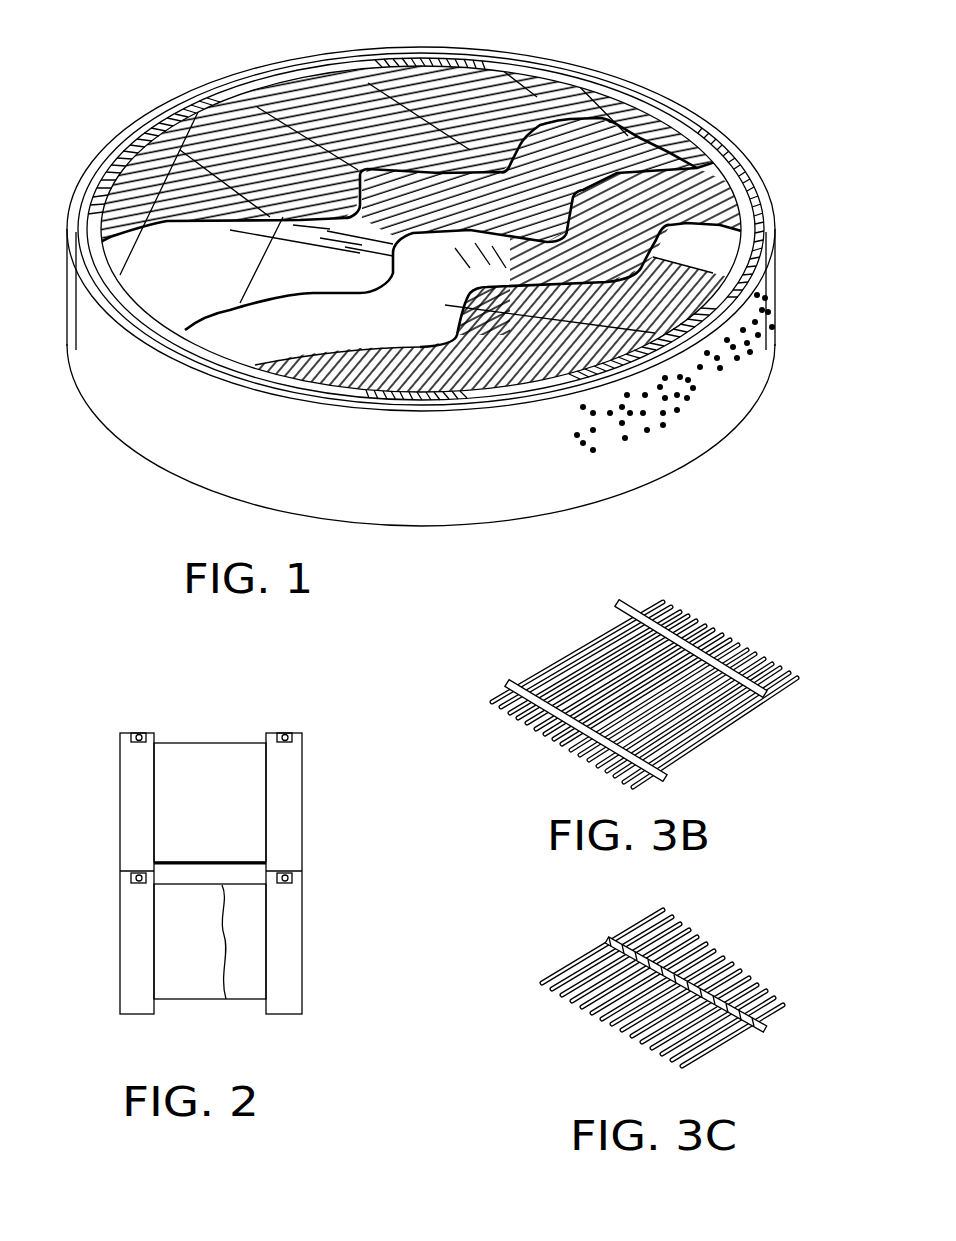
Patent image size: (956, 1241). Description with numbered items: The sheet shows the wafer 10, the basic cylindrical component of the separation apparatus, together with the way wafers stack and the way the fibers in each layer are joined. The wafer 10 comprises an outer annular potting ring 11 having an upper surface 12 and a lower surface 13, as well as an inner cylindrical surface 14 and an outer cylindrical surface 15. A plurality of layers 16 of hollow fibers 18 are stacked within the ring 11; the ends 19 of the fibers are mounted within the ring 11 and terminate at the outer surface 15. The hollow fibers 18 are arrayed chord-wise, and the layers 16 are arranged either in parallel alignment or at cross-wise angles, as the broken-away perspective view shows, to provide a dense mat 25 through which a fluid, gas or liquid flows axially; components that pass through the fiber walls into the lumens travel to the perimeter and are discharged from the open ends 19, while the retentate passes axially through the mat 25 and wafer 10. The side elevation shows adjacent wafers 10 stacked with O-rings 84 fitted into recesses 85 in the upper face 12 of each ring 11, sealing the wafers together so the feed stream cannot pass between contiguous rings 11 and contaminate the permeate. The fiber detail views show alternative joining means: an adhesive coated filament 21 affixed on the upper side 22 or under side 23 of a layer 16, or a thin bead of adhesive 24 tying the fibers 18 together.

In FIG. 1, the wafer 10 is at (425, 292).
In FIG. 2, the wafer 10 is at (220, 864).
In FIG. 2, the outer annular potting ring 11 is at (283, 824).
In FIG. 1, the upper surface 12 is at (700, 123).
In FIG. 1, the lower surface 13 is at (373, 527).
In FIG. 1, the inner cylindrical surface 14 is at (270, 97).
In FIG. 1, the outer cylindrical surface 15 is at (233, 480).
In FIG. 1, the layer 16 is at (563, 117).
In FIG. 3B, the hollow fiber 18 is at (693, 620).
In FIG. 3C, the hollow fiber 18 is at (710, 1048).
In FIG. 1, the end 19 is at (693, 405).
In FIG. 3B, the end 19 is at (545, 733).
In FIG. 3C, the end 19 is at (583, 1010).
In FIG. 1, the adhesive coated filament 21 is at (313, 137).
In FIG. 3B, the adhesive coated filament 21 is at (617, 603).
In FIG. 3B, the upper side 22 is at (598, 667).
In FIG. 3C, the upper side 22 is at (593, 967).
In FIG. 2, the under side 23 is at (206, 1001).
In FIG. 3B, the under side 23 is at (693, 752).
In FIG. 2, the bead of adhesive 24 is at (180, 786).
In FIG. 3C, the bead of adhesive 24 is at (607, 942).
In FIG. 2, the dense mat 25 is at (226, 915).
In FIG. 2, the O-ring 84 is at (140, 731).
In FIG. 1, the recess 85 is at (110, 175).
In FIG. 2, the recess 85 is at (279, 740).